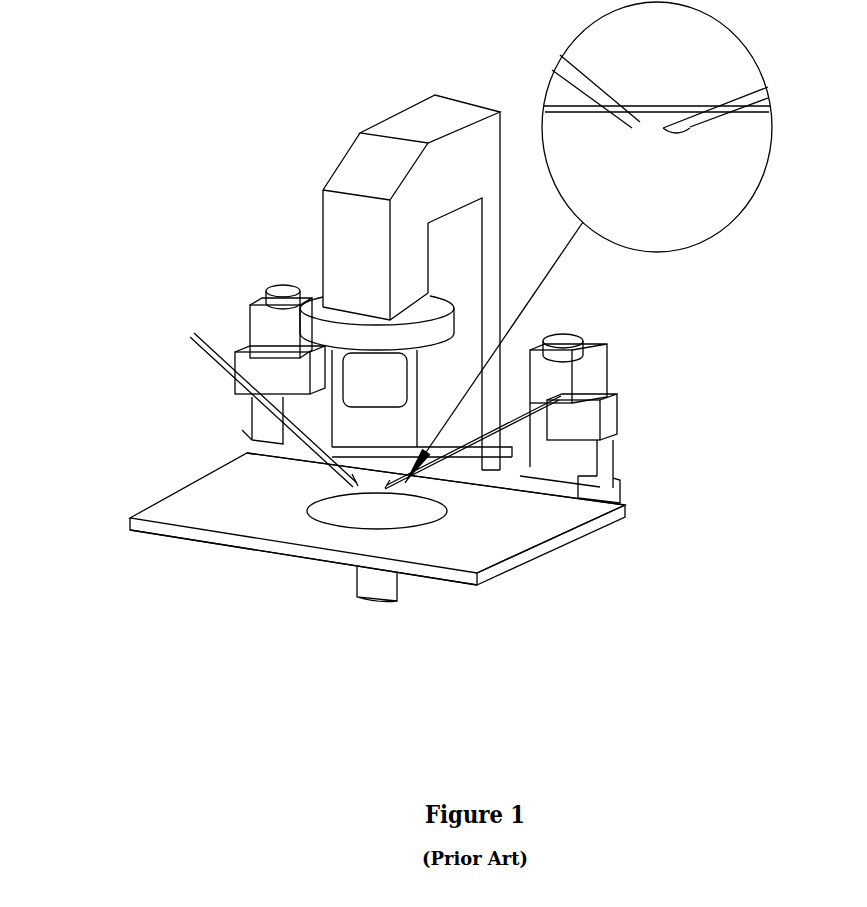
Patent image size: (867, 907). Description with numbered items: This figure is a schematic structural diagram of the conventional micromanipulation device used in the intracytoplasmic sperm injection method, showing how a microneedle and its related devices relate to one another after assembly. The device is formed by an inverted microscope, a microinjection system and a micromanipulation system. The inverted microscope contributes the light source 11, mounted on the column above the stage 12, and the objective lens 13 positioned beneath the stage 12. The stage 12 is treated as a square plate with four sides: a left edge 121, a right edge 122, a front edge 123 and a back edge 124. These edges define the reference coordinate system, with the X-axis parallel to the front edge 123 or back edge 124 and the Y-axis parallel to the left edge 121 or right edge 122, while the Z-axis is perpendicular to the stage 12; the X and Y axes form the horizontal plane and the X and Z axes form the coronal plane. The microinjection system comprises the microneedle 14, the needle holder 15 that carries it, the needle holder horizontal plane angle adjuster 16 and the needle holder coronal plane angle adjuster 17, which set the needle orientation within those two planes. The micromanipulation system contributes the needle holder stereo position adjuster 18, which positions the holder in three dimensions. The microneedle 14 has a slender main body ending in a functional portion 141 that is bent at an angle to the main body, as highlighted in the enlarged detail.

The light source 11 is at (405, 240).
The stage 12 is at (493, 530).
The left edge 121 is at (180, 497).
The right edge 122 is at (533, 545).
The front edge 123 is at (190, 527).
The back edge 124 is at (570, 508).
The objective lens 13 is at (388, 594).
The microneedle 14 is at (390, 480).
The functional portion 141 is at (637, 123).
The needle holder 15 is at (398, 490).
The needle holder horizontal plane angle adjuster 16 is at (235, 403).
The needle holder coronal plane angle adjuster 17 is at (215, 397).
The needle holder stereo position adjuster 18 is at (242, 342).